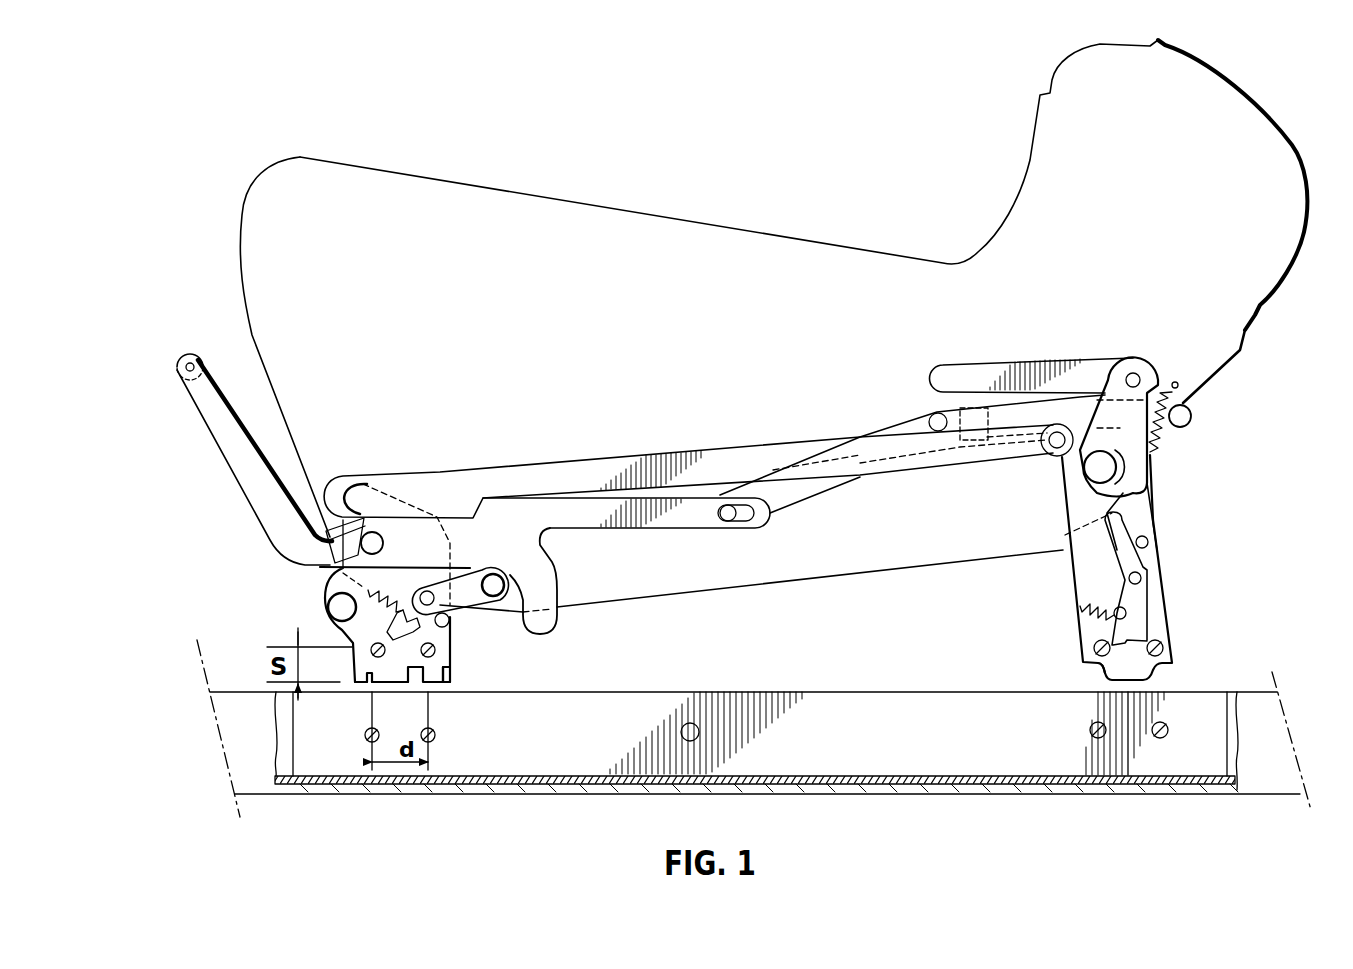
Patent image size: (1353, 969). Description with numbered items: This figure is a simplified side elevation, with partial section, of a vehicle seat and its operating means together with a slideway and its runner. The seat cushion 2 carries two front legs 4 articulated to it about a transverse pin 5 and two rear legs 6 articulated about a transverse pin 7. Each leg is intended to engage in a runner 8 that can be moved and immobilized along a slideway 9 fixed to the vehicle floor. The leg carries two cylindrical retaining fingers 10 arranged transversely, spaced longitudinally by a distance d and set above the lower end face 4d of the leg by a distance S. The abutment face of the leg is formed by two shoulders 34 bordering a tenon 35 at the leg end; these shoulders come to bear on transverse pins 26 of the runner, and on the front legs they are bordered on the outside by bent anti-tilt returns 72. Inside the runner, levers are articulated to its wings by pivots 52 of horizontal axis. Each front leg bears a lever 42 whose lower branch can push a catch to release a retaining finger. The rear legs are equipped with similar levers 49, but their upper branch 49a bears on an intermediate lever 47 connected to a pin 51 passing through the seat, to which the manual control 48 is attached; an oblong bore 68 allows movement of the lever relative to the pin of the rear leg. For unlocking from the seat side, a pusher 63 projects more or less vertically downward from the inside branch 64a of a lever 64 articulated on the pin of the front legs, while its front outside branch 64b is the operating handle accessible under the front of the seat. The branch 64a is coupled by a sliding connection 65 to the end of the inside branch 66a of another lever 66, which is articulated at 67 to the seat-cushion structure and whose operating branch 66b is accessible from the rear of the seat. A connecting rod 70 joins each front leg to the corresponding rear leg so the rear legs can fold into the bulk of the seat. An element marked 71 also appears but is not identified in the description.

The seat cushion 2 is at (778, 258).
The front legs 4 is at (340, 582).
The lower end face 4d is at (412, 688).
The transverse pin 5 is at (368, 533).
The rear legs 6 is at (1147, 558).
The transverse pin 7 is at (1075, 482).
The runner 8 is at (630, 715).
The slideway 9 is at (1259, 727).
The retaining fingers 10 is at (423, 600).
The transverse pins 26 is at (440, 732).
The shoulders 34 is at (370, 675).
The tenon 35 is at (407, 677).
The lever 42 is at (467, 587).
The intermediate lever 47 is at (1130, 493).
The manual control 48 is at (1040, 367).
The levers 49 is at (1137, 607).
The upper branch 49a is at (1123, 552).
The pin 51 is at (1138, 362).
The pivots 52 is at (700, 732).
The pusher 63 is at (542, 583).
The lever 64 is at (443, 510).
The inside branch 64a is at (563, 513).
The front outside branch 64b is at (233, 447).
The sliding connection 65 is at (742, 522).
The lever 66 is at (878, 427).
The inside branch 66a is at (782, 488).
The operating branch 66b is at (1178, 385).
The articulation 67 is at (941, 413).
The oblong bore 68 is at (1125, 467).
The connecting rod 70 is at (690, 455).
The pivot pin 71 is at (190, 358).
The bent anti-tilt returns 72 is at (448, 676).